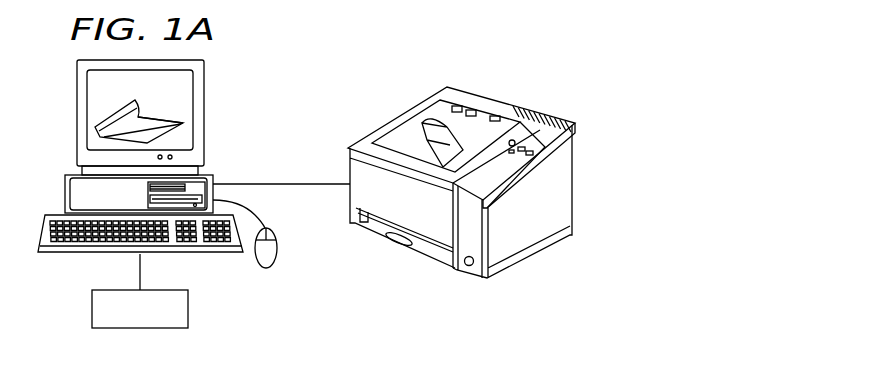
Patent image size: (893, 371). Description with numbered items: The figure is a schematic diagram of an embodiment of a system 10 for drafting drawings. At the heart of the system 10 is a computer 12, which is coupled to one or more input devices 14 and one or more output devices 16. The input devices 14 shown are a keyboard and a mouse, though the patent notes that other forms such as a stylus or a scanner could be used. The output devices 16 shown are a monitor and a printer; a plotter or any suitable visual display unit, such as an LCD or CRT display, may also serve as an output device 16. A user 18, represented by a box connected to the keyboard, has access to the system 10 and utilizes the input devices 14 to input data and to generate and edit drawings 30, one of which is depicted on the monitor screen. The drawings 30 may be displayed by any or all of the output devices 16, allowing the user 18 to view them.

The system 10 is at (385, 61).
The computer 12 is at (67, 196).
The input device 14 is at (74, 258).
The output device 16 is at (286, 182).
The user 18 is at (190, 304).
The drawing 30 is at (143, 118).